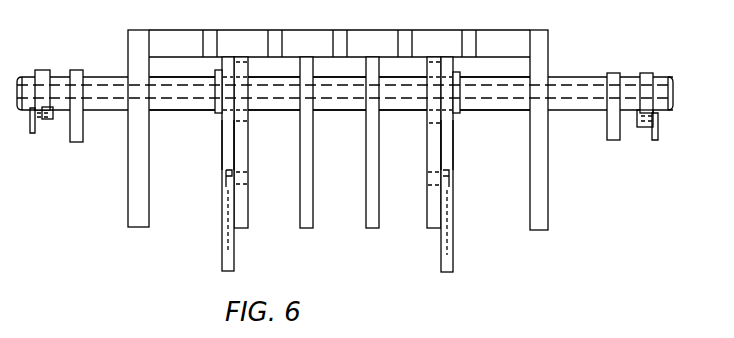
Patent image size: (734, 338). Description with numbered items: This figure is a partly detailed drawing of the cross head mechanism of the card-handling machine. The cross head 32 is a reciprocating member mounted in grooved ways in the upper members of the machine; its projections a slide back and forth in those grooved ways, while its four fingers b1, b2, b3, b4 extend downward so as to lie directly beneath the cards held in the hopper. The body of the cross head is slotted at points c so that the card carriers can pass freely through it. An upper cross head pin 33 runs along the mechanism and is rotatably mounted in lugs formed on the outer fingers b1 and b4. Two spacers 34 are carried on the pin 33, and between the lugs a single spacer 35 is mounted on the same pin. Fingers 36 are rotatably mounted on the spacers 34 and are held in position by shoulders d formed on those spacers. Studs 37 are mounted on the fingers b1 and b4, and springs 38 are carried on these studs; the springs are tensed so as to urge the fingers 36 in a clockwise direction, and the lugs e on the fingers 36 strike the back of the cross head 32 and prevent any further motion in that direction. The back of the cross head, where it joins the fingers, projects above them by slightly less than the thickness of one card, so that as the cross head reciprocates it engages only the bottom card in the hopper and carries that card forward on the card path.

The cross head 32 is at (133, 57).
The upper cross head pin 33 is at (585, 97).
The spacers 34 is at (503, 113).
The spacer 35 is at (343, 101).
The fingers 36 is at (470, 162).
The studs 37 is at (477, 190).
The springs 38 is at (425, 255).
The projections a is at (553, 174).
The finger b1 is at (243, 208).
The finger b2 is at (310, 210).
The finger b3 is at (372, 210).
The finger b4 is at (435, 208).
The slots c is at (470, 33).
The shoulders d is at (461, 75).
The lugs e is at (449, 66).